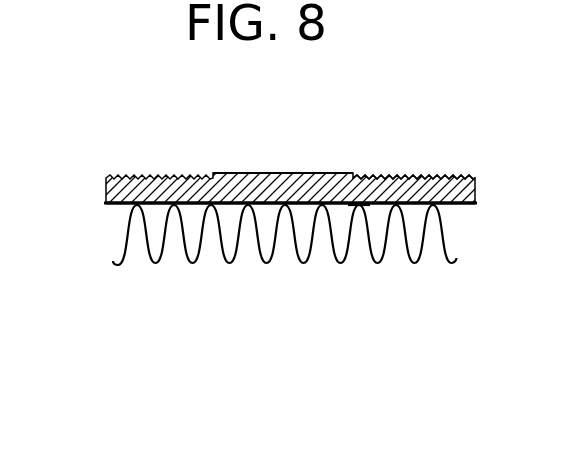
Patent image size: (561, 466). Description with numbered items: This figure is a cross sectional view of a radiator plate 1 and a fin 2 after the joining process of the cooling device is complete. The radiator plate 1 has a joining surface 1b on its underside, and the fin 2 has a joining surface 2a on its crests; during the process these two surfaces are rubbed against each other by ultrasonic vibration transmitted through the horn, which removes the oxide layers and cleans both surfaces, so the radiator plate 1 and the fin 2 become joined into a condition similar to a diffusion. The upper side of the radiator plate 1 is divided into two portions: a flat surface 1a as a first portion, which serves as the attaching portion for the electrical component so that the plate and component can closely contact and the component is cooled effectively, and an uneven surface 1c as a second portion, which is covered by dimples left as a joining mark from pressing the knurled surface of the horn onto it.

The radiator plate 1 is at (274, 164).
The flat surface 1a is at (321, 173).
The joining surface 1b is at (141, 206).
The uneven surface 1c is at (446, 176).
The fin 2 is at (450, 240).
The joining surface 2a is at (360, 207).